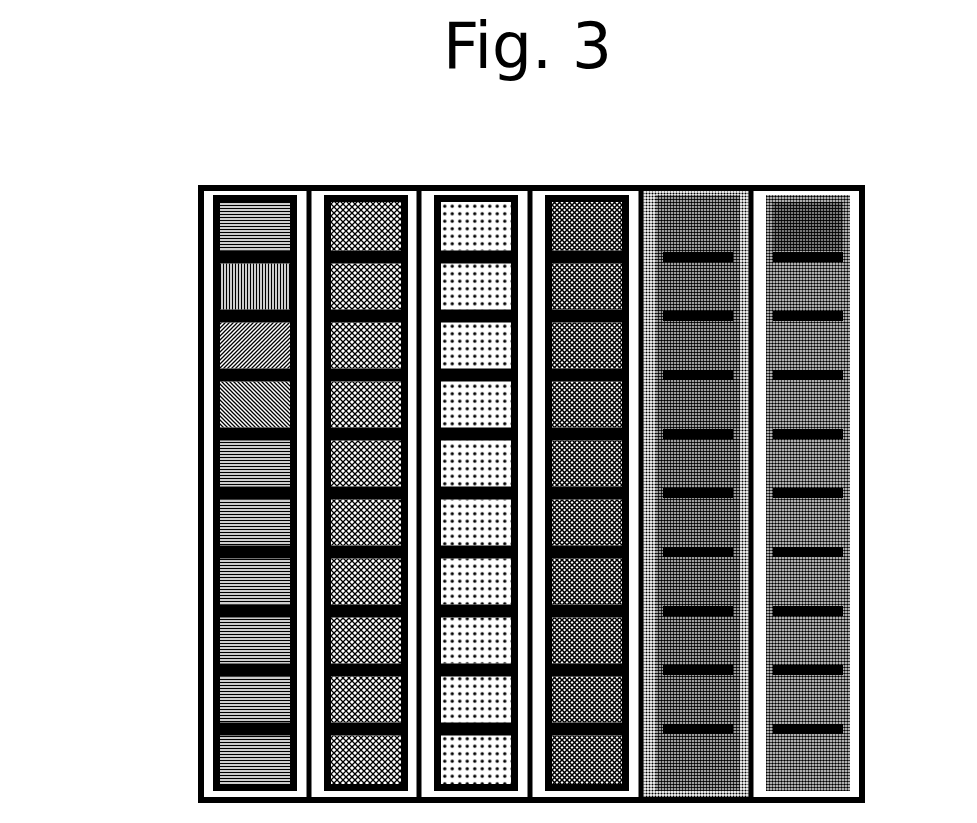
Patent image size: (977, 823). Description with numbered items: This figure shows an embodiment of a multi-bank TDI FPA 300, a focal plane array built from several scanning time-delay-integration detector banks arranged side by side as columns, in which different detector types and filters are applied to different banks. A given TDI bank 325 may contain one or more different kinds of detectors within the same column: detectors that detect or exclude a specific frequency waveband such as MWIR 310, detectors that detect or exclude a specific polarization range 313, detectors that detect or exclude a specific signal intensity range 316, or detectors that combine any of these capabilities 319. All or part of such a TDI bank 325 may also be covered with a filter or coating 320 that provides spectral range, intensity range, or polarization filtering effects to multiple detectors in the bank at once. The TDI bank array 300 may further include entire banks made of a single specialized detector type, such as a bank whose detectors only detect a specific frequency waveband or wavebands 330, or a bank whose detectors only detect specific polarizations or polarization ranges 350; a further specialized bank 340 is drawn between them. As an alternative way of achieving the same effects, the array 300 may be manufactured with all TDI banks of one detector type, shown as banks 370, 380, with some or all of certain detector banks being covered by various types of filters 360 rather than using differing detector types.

The multi-bank TDI FPA 300 is at (253, 187).
The frequency waveband detector 310 is at (174, 460).
The polarization range detector 313 is at (217, 257).
The signal intensity range detector 316 is at (217, 320).
The combination detector 319 is at (217, 383).
The TDI bank 325 is at (210, 428).
The filter or coating 320 is at (210, 507).
The frequency waveband TDI bank 330 is at (350, 198).
The third column 340 is at (425, 195).
The polarization TDI bank 350 is at (592, 197).
The filter 360 is at (650, 197).
The single detector type TDI bank 380 is at (844, 450).
The single detector type TDI bank 370 is at (848, 223).